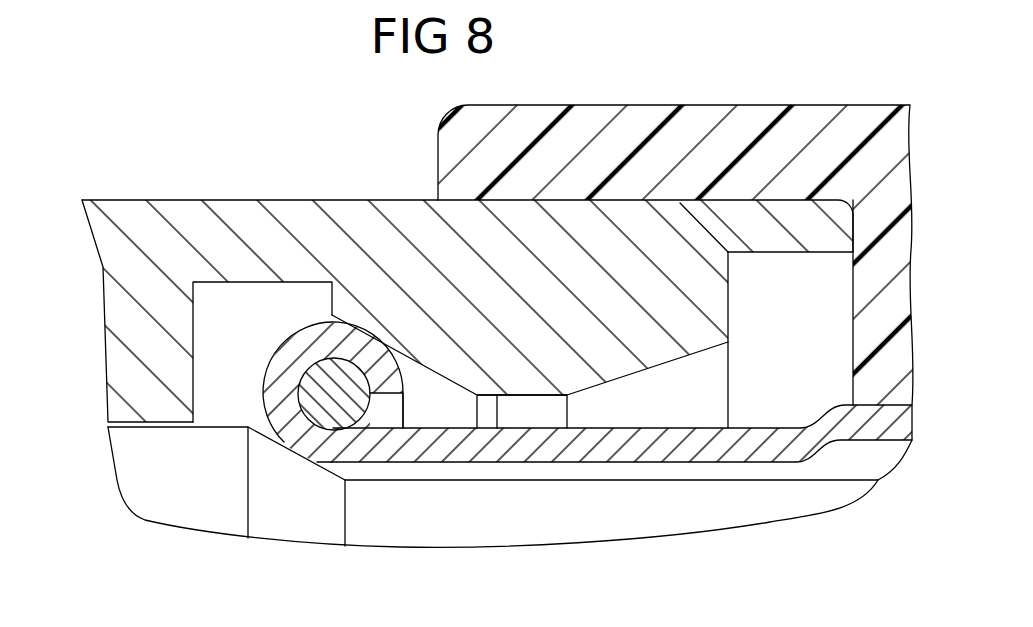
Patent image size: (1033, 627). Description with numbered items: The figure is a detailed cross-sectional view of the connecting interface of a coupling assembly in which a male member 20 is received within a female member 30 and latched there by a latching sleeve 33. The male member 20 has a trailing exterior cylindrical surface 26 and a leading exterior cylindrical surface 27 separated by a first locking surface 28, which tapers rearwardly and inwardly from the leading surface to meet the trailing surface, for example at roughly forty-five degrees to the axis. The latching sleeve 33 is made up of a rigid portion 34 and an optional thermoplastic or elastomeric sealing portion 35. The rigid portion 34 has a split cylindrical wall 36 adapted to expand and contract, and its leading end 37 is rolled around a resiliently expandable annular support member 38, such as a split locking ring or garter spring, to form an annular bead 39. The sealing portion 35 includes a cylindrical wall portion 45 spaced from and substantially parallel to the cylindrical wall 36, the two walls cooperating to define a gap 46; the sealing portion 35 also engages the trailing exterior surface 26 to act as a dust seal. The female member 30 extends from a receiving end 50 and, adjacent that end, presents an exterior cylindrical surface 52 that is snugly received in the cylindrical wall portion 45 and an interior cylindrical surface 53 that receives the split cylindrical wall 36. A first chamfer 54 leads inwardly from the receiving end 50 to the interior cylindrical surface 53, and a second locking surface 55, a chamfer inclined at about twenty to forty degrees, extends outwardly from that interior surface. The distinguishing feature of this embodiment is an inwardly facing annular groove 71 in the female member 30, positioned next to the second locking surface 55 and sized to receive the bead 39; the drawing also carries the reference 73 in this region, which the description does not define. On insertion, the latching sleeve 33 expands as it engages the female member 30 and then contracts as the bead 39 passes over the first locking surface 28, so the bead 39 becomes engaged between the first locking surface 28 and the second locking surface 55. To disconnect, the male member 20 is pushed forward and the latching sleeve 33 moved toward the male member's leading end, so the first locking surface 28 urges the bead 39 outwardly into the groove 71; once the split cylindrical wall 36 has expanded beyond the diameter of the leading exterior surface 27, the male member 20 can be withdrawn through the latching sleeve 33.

The male member 20 is at (123, 527).
The trailing exterior cylindrical surface 26 is at (623, 528).
The leading exterior cylindrical surface 27 is at (194, 501).
The first locking surface 28 is at (287, 513).
The female member 30 is at (197, 200).
The latching sleeve 33 is at (708, 100).
The rigid portion 34 is at (672, 455).
The sealing portion 35 is at (548, 103).
The cylindrical wall 36 is at (738, 450).
The leading end 37 is at (283, 343).
The annular support member 38 is at (370, 432).
The annular bead 39 is at (258, 393).
The cylindrical wall portion 45 is at (813, 117).
The gap 46 is at (782, 298).
The receiving end 50 is at (728, 284).
The exterior cylindrical surface 52 is at (347, 200).
The interior cylindrical surface 53 is at (497, 430).
The first chamfer 54 is at (683, 357).
The second locking surface 55 is at (425, 405).
The annular groove 71 is at (252, 284).
The groove wall 73 is at (332, 290).